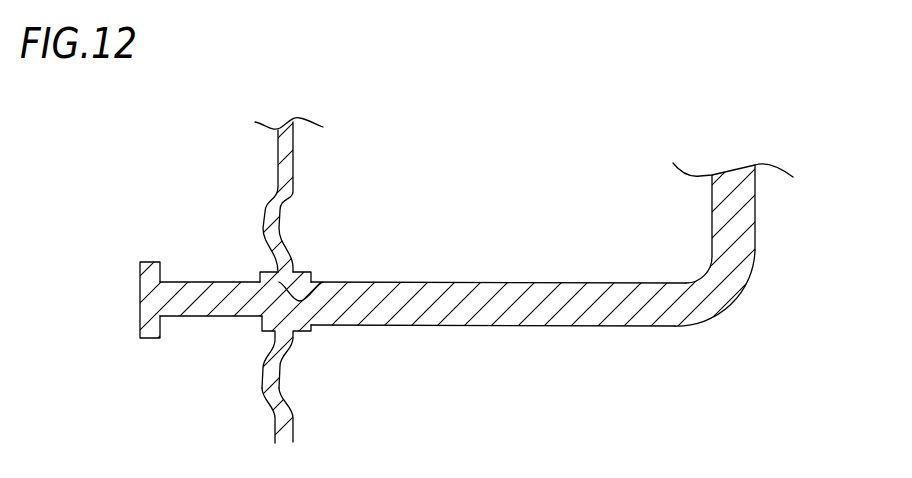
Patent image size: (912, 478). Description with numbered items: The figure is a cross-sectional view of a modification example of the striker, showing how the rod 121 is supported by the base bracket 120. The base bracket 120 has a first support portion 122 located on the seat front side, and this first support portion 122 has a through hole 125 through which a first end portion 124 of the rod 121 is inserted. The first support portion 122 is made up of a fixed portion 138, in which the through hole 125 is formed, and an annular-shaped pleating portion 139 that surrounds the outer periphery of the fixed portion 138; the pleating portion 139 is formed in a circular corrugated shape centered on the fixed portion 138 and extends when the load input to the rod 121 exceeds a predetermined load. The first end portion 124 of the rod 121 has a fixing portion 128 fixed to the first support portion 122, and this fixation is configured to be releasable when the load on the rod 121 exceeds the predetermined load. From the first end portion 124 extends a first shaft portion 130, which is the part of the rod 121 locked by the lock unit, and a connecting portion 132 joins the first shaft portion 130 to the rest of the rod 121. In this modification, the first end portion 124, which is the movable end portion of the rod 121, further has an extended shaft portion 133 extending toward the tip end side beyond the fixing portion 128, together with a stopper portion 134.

The base bracket 120 is at (265, 143).
The rod 121 is at (746, 310).
The first support portion 122 is at (186, 381).
The first end portion 124 is at (132, 275).
The through hole 125 is at (322, 288).
The fixing portion 128 is at (300, 279).
The first shaft portion 130 is at (488, 308).
The connecting portion 132 is at (760, 203).
The extended shaft portion 133 is at (215, 282).
The stopper portion 134 is at (138, 260).
The fixed portion 138 is at (272, 345).
The pleating portion 139 is at (268, 389).